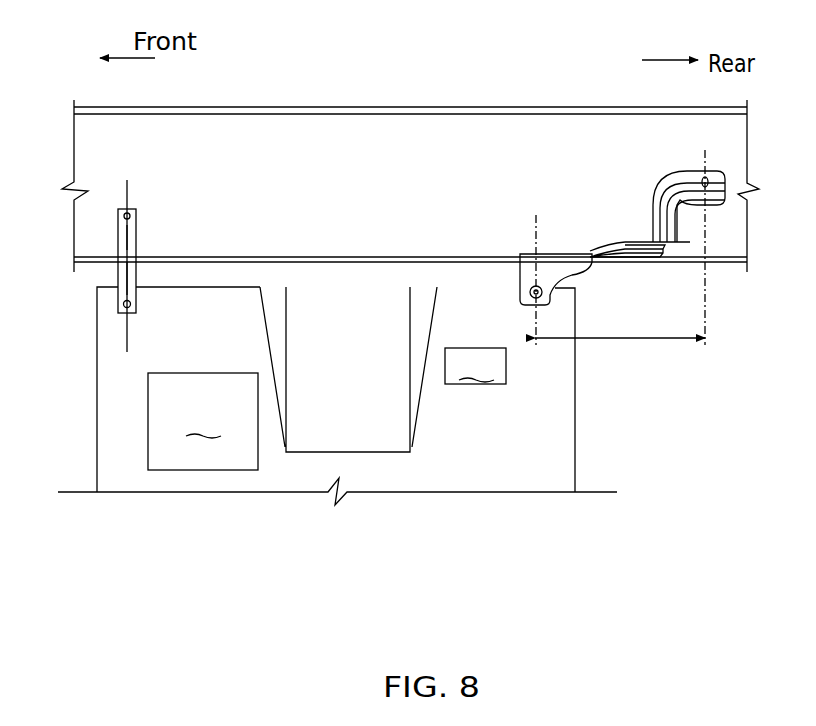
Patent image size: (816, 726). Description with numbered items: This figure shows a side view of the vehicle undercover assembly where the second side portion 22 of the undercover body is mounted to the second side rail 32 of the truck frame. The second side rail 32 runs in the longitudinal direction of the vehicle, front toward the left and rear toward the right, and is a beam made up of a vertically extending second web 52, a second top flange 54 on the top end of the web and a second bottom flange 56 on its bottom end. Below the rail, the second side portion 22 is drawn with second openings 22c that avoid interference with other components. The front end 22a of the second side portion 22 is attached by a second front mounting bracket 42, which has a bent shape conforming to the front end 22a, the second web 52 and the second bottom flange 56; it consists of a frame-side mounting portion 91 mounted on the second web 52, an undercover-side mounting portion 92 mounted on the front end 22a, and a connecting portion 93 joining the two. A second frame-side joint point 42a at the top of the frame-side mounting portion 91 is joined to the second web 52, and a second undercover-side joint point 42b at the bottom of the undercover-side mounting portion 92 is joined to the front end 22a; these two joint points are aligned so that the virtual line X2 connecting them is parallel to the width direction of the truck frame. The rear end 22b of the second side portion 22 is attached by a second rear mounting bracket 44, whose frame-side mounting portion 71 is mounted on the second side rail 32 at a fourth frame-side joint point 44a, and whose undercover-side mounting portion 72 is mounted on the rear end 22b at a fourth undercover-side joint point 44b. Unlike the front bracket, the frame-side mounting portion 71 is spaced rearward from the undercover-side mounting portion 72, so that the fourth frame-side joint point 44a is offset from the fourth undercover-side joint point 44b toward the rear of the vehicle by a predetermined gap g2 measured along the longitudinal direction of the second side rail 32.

The second side portion 22 is at (356, 355).
The front end of the second side portion 22a is at (90, 303).
The rear end of the second side portion 22b is at (584, 293).
The second opening 22c is at (327, 409).
The second side rail 32 is at (410, 150).
The second front mounting bracket 42 is at (122, 258).
The second frame-side joint point 42a is at (126, 212).
The second undercover-side joint point 42b is at (131, 306).
The second rear mounting bracket 44 is at (577, 236).
The fourth frame-side joint point 44a is at (705, 176).
The fourth undercover-side joint point 44b is at (528, 290).
The second web 52 is at (470, 143).
The second top flange 54 is at (532, 108).
The second bottom flange 56 is at (384, 258).
The frame-side mounting portion 71 is at (663, 196).
The undercover-side mounting portion 72 is at (527, 257).
The frame-side mounting portion 91 is at (124, 229).
The undercover-side mounting portion 92 is at (136, 277).
The connecting portion 93 is at (136, 250).
The virtual line X2 is at (126, 333).
The predetermined gap g2 is at (625, 354).